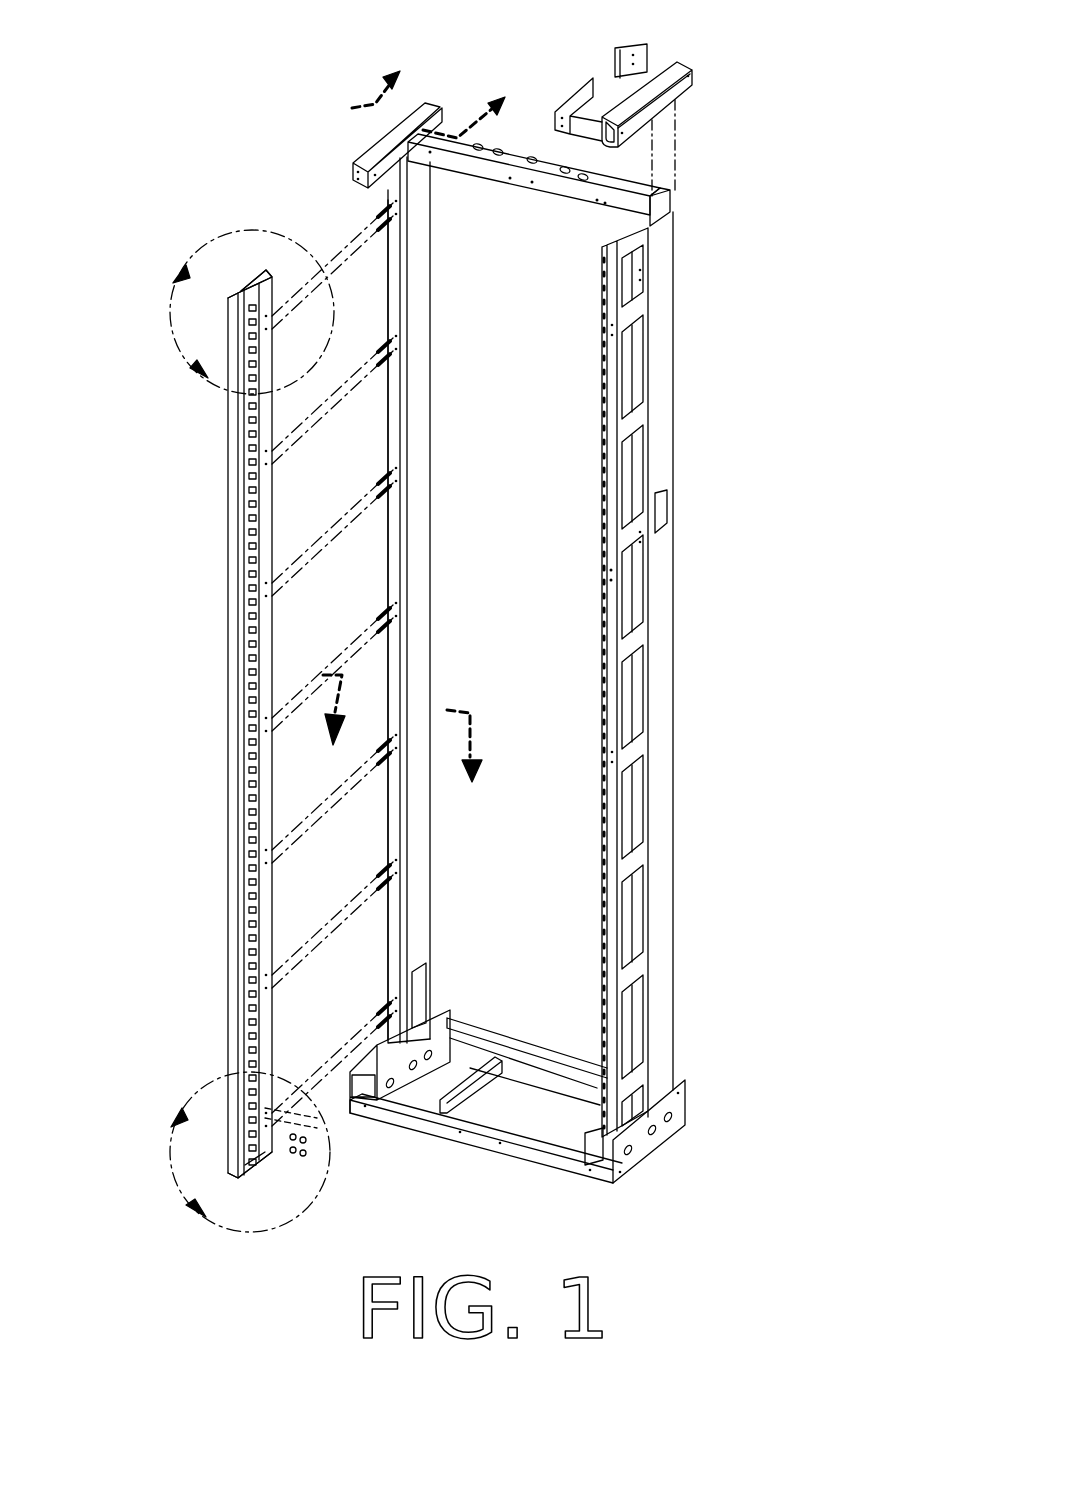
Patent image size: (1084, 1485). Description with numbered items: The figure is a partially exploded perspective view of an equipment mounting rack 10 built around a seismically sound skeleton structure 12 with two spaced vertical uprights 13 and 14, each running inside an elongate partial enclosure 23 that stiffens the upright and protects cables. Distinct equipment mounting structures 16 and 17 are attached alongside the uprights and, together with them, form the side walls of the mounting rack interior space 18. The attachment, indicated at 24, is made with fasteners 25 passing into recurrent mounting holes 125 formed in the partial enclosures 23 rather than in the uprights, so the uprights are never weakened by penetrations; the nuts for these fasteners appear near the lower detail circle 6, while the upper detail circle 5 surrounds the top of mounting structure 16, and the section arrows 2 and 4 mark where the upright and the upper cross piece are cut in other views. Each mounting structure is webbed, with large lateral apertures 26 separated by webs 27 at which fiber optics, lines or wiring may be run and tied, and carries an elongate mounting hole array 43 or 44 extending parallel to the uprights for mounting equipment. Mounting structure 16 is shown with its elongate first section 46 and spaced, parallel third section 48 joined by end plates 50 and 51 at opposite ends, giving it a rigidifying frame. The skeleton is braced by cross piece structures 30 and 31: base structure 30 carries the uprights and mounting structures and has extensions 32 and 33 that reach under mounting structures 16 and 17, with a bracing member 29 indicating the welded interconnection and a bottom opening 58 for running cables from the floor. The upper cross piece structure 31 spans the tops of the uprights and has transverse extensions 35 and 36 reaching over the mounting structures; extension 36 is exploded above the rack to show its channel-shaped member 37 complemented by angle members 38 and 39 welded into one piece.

The equipment mounting rack 10 is at (672, 296).
The seismically sound skeleton structure 12 is at (436, 415).
The vertical upright 13 is at (432, 480).
The vertical upright 14 is at (668, 508).
The equipment mounting structure 16 is at (222, 740).
The equipment mounting structure 17 is at (650, 621).
The mounting rack interior space 18 is at (542, 690).
The elongate partial enclosure 23 is at (660, 670).
The attachment of mounting structures to partial enclosures 24 is at (320, 523).
The fasteners 25 is at (297, 1152).
The apertures 26 is at (643, 400).
The webs 27 is at (636, 735).
The bracing member 29 is at (420, 1000).
The base structure 30 is at (538, 1037).
The cross piece structure 31 is at (503, 187).
The extension 32 is at (388, 1052).
The extension 33 is at (632, 1128).
The transverse extension 35 is at (362, 152).
The transverse extension 36 is at (687, 93).
The channel-shaped member 37 is at (640, 122).
The angle member 38 is at (659, 89).
The angle member 39 is at (632, 50).
The elongate mounting hole array 43 is at (240, 675).
The elongate mounting hole array 44 is at (604, 575).
The elongate first section 46 is at (265, 608).
The elongate third section 48 is at (235, 918).
The end plate 50 is at (262, 1158).
The end plate 51 is at (257, 277).
The bottom opening 58 is at (542, 1133).
The recurrent mounting holes 125 is at (393, 995).
The section view indicator 2 is at (397, 782).
The section view indicator 4 is at (438, 69).
The detail view indicator 5 is at (242, 312).
The detail view indicator 6 is at (240, 1152).